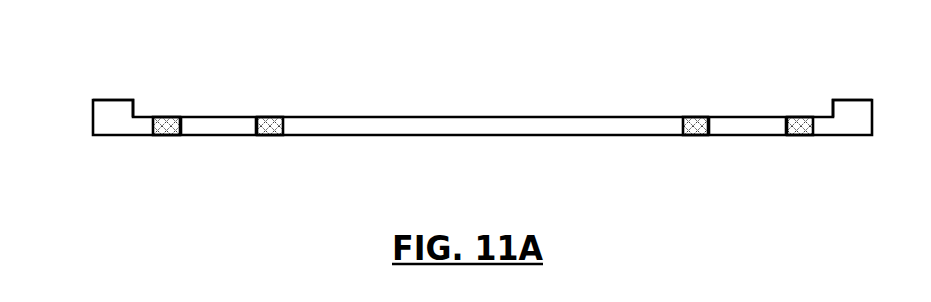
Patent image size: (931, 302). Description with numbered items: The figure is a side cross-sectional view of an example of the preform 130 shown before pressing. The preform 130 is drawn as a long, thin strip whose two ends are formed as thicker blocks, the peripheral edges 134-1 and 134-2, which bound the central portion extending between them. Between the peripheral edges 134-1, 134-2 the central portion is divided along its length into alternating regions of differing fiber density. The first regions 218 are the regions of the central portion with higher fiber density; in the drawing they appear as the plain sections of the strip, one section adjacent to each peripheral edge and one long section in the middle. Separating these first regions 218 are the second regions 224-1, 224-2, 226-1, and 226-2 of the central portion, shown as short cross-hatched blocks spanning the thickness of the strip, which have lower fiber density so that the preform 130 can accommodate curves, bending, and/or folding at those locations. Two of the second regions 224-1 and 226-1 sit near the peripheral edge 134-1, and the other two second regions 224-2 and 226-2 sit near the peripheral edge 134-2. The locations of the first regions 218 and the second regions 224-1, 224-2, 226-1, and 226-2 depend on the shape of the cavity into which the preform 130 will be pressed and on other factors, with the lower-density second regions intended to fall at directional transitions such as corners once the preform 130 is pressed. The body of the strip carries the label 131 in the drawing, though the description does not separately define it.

The preform 130 is at (447, 108).
The elongated body 131 is at (473, 115).
The first regions 218 is at (230, 115).
The peripheral edge 134-1 is at (112, 108).
The peripheral edge 134-2 is at (852, 108).
The second region 224-1 is at (167, 136).
The second region 224-2 is at (693, 136).
The second region 226-1 is at (268, 137).
The second region 226-2 is at (795, 137).